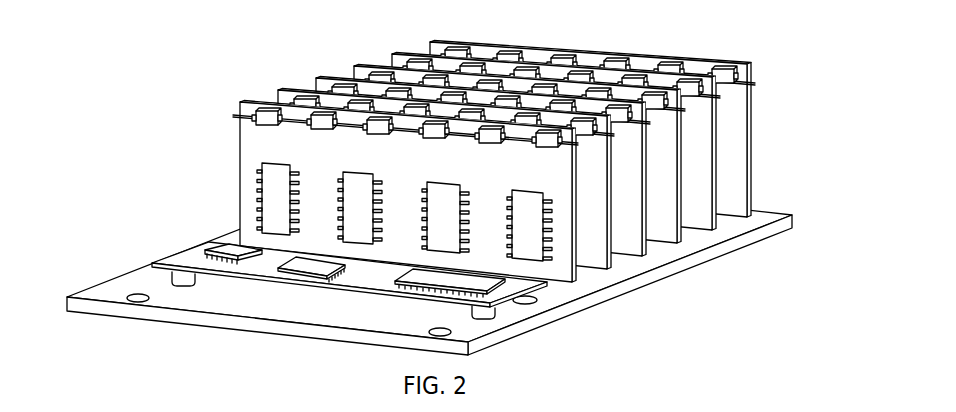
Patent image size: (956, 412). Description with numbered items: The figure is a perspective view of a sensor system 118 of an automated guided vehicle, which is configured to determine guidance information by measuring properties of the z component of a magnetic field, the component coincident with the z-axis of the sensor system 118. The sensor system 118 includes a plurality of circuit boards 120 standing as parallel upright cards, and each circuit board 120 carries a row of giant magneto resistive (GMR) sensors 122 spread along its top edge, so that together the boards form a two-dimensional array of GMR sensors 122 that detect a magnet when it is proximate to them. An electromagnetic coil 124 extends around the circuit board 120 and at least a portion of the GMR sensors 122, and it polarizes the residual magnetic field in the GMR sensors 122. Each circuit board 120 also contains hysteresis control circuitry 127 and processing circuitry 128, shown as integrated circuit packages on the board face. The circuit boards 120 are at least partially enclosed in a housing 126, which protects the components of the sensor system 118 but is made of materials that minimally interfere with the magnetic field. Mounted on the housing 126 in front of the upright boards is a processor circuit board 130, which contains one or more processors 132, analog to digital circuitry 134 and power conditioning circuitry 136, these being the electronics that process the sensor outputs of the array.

The sensor system 118 is at (437, 261).
The circuit board 120 is at (558, 181).
The giant magneto resistive (GMR) sensors 122 is at (345, 82).
The electromagnetic coil 124 is at (232, 115).
The housing 126 is at (93, 308).
The hysteresis control circuitry 127 is at (286, 207).
The processing circuitry 128 is at (537, 234).
The processor circuit board 130 is at (351, 293).
The processors 132 is at (405, 283).
The analog to digital (A/D) circuitry 134 is at (218, 250).
The power conditioning circuitry 136 is at (540, 284).